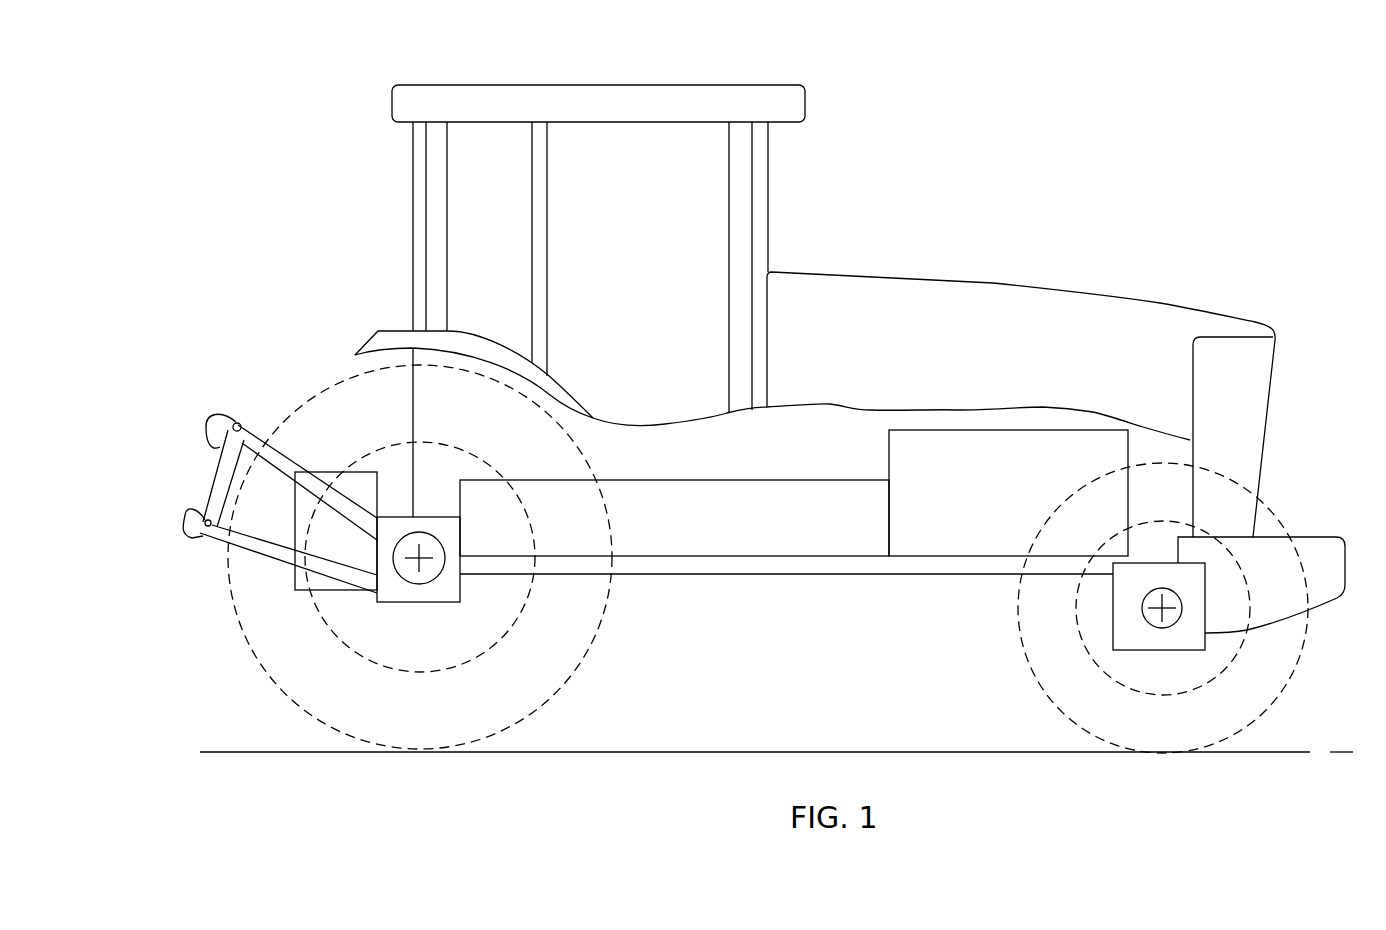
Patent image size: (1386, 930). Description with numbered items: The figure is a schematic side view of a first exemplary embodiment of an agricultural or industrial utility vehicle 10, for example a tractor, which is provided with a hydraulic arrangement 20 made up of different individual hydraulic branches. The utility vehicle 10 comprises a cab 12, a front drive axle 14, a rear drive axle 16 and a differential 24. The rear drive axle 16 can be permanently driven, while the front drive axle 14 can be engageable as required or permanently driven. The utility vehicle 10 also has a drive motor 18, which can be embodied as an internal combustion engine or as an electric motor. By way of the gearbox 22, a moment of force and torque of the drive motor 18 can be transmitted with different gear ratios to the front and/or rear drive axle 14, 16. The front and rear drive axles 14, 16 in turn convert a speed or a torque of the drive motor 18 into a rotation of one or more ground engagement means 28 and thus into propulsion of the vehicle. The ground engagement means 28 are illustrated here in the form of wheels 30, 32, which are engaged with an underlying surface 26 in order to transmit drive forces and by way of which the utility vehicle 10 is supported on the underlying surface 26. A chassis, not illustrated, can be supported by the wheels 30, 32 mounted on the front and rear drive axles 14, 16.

The utility vehicle 10 is at (1050, 77).
The cab 12 is at (682, 110).
The front drive axle 14 is at (1168, 612).
The rear drive axle 16 is at (414, 553).
The drive motor 18 is at (1008, 493).
The hydraulic arrangement 20 is at (673, 529).
The gearbox 22 is at (1018, 507).
The differential 24 is at (432, 517).
The underlying surface 26 is at (540, 752).
The ground engagement means 28 is at (768, 552).
The wheel 30 is at (307, 400).
The wheel 32 is at (1080, 673).